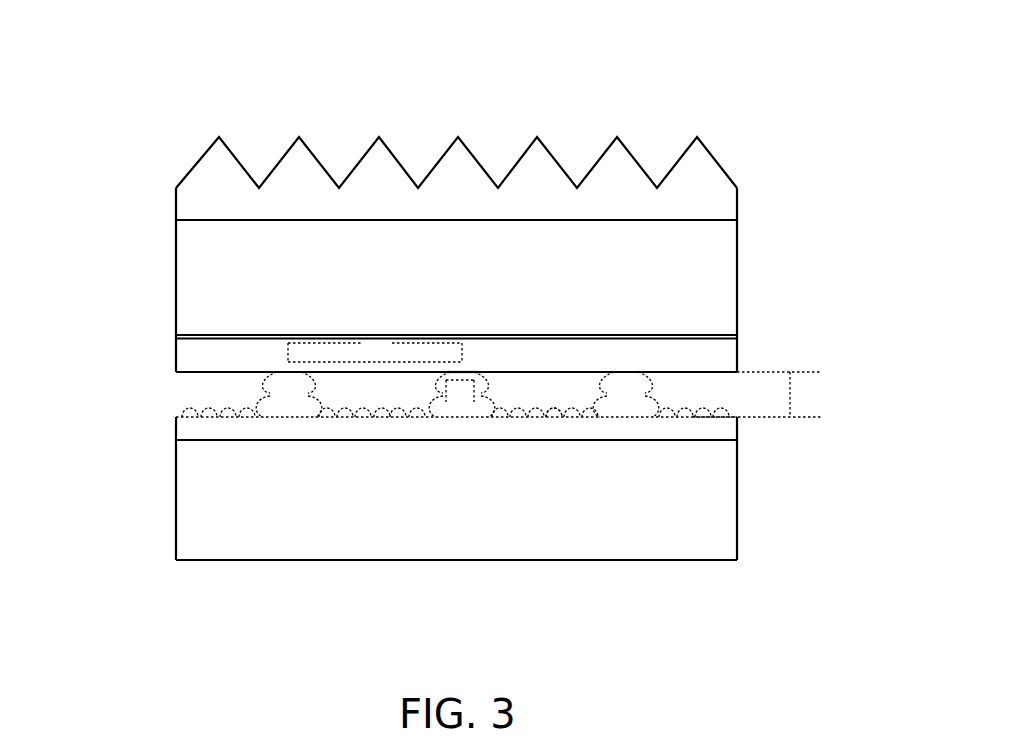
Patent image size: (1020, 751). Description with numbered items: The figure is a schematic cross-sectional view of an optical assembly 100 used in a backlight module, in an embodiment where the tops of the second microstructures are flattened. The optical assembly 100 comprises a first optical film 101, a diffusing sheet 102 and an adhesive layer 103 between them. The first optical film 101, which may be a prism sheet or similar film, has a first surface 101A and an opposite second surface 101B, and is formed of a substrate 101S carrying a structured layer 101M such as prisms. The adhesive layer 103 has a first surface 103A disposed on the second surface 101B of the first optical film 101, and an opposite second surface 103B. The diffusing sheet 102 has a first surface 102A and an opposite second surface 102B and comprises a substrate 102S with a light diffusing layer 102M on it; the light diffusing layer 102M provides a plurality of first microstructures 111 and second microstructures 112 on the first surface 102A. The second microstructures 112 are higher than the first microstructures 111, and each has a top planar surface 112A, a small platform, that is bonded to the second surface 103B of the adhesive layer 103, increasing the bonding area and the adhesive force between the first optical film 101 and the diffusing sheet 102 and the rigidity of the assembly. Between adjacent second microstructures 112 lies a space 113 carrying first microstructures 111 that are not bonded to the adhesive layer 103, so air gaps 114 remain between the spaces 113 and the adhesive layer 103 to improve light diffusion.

The optical assembly 100 is at (814, 27).
The first optical film 101 is at (499, 185).
The first surface 101A is at (362, 158).
The structured layer 101M is at (497, 128).
The substrate 101S is at (702, 250).
The second surface 101B is at (273, 335).
The adhesive layer 103 is at (394, 300).
The first surface 103A is at (240, 338).
The second surface 103B is at (222, 368).
The diffusing sheet 102 is at (434, 525).
The light diffusing layer 102M is at (461, 456).
The substrate 102S is at (228, 508).
The first surface 102A is at (695, 418).
The second surface 102B is at (615, 562).
The first microstructures 111 is at (212, 407).
The second microstructures 112 is at (560, 451).
The top planar surface 112A is at (462, 372).
The space 113 is at (555, 418).
The air gaps 114 is at (553, 392).